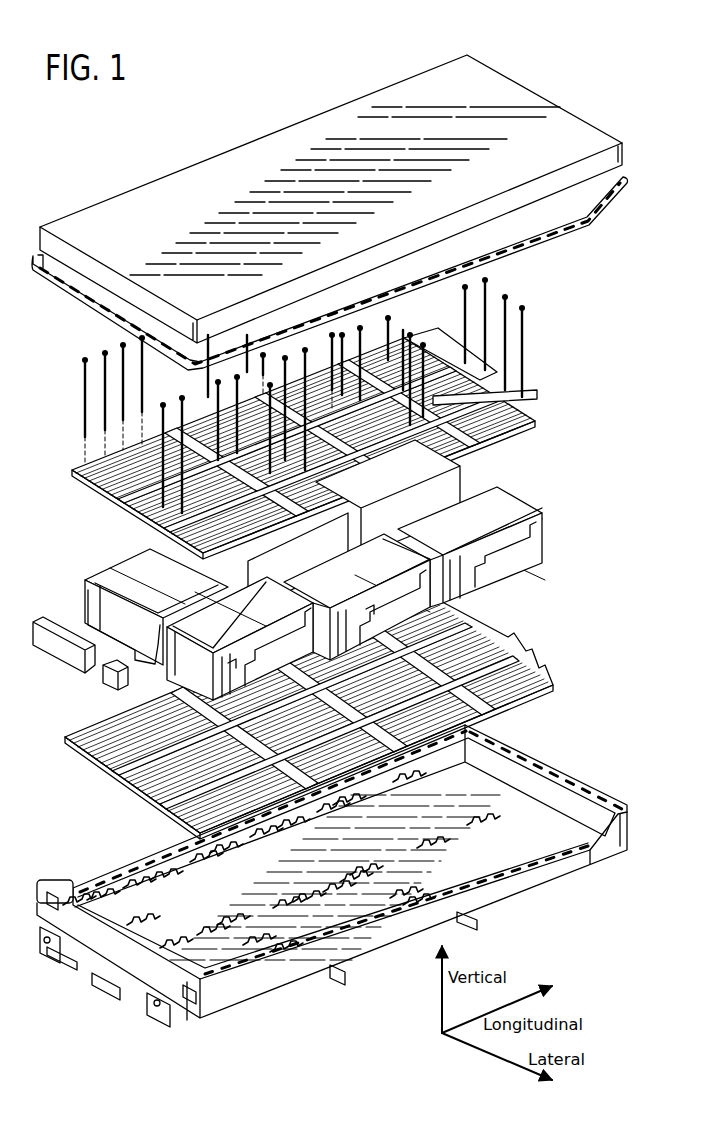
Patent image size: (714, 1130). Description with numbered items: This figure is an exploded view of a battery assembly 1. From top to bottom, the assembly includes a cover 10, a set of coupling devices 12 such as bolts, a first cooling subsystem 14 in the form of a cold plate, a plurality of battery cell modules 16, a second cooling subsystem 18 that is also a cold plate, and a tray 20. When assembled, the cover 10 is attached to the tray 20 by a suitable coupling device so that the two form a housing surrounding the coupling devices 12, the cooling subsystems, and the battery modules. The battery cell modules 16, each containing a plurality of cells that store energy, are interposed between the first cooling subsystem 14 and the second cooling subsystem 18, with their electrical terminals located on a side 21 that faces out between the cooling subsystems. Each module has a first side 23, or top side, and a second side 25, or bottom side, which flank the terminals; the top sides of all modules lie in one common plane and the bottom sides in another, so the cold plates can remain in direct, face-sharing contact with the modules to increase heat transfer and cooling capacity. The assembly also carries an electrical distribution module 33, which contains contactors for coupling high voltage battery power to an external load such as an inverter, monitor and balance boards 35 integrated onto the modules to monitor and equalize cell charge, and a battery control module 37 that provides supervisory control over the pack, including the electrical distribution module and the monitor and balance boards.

The battery assembly 1 is at (100, 170).
The cover 10 is at (90, 207).
The coupling devices 12 is at (105, 351).
The first cooling subsystem 14 is at (88, 507).
The battery cell modules 16 is at (152, 591).
The second cooling subsystem 18 is at (82, 772).
The tray 20 is at (53, 881).
The side 21 is at (230, 656).
The first side 23 is at (106, 582).
The second side 25 is at (515, 591).
The electrical distribution module 33 is at (115, 690).
The monitor and balance boards 35 is at (126, 632).
The battery control module 37 is at (52, 658).